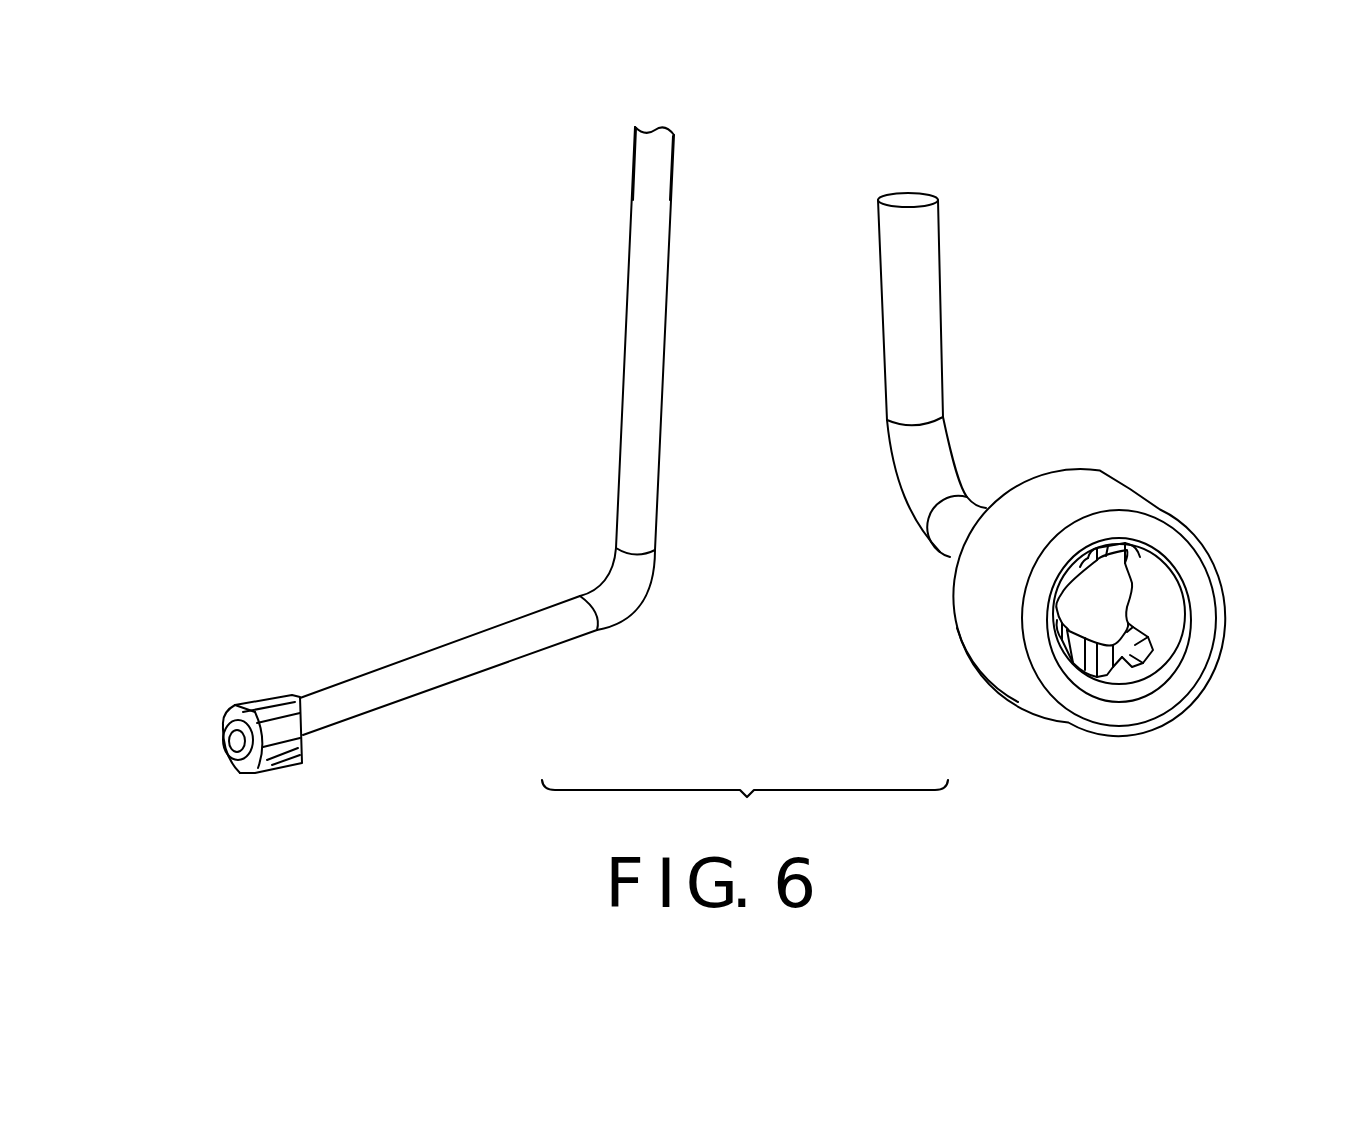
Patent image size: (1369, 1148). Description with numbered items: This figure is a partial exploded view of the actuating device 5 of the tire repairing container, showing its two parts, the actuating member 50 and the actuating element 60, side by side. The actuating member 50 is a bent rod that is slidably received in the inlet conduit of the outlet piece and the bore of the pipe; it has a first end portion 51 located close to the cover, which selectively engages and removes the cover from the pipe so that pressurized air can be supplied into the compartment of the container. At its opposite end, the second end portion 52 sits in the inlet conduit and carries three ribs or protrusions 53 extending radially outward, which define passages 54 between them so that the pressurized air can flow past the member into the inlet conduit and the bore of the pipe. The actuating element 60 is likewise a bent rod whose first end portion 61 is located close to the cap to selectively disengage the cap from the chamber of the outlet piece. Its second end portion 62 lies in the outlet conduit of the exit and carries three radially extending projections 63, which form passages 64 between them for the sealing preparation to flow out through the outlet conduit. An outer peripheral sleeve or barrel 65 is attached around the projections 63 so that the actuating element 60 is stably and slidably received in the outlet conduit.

The actuating device 5 is at (913, 563).
The actuating member 50 is at (635, 394).
The first end portion 51 is at (664, 165).
The second end portion 52 is at (233, 742).
The protrusions 53 is at (277, 715).
The passages 54 is at (282, 748).
The actuating element 60 is at (928, 322).
The first end portion 61 is at (922, 198).
The second end portion 62 is at (1103, 590).
The projections 63 is at (1120, 645).
The passages 64 is at (1138, 595).
The barrel 65 is at (1040, 650).